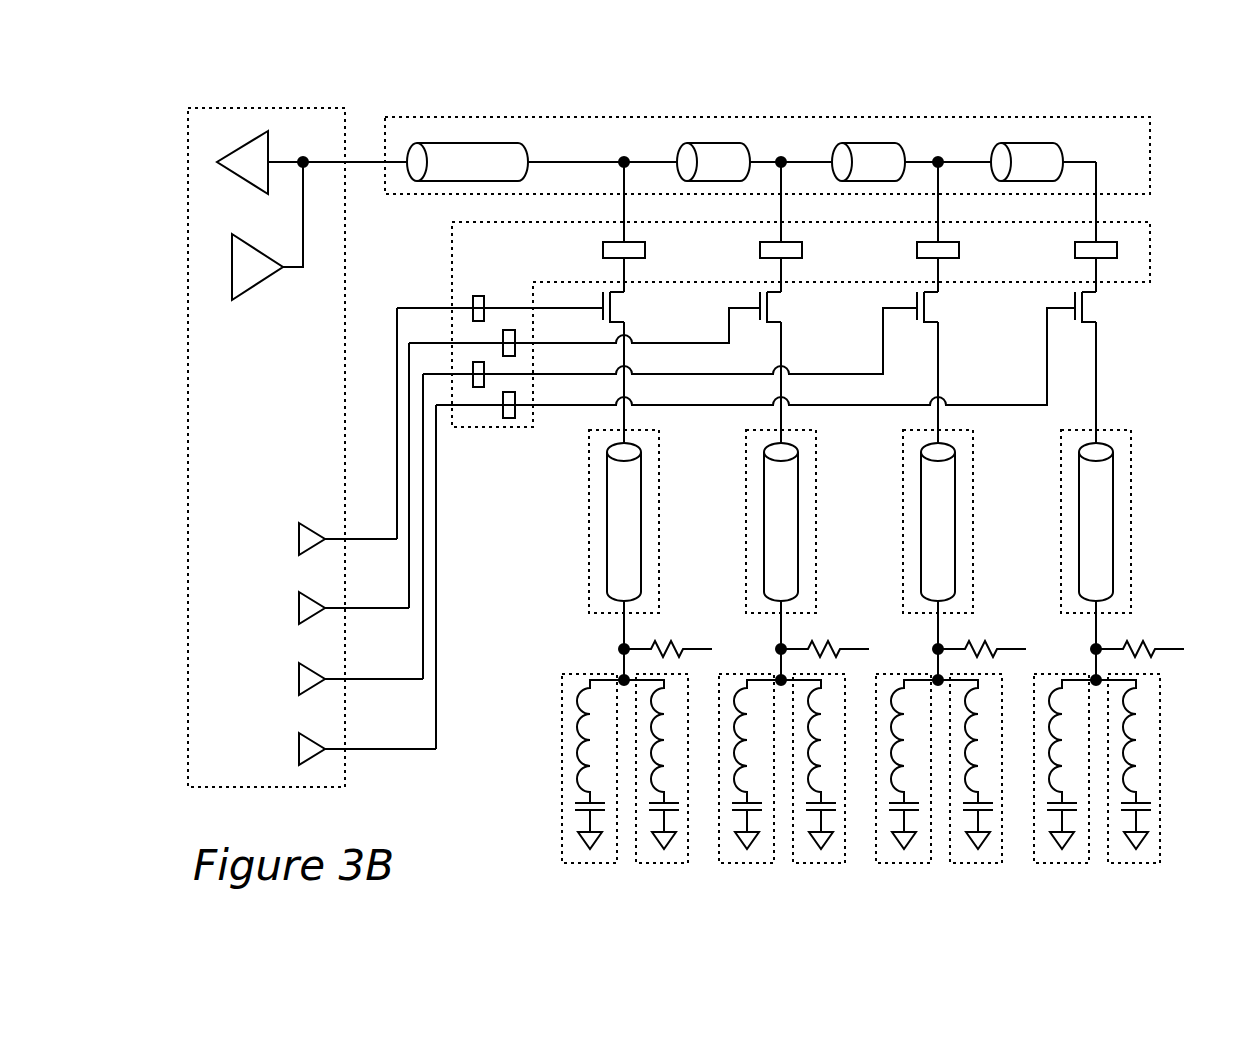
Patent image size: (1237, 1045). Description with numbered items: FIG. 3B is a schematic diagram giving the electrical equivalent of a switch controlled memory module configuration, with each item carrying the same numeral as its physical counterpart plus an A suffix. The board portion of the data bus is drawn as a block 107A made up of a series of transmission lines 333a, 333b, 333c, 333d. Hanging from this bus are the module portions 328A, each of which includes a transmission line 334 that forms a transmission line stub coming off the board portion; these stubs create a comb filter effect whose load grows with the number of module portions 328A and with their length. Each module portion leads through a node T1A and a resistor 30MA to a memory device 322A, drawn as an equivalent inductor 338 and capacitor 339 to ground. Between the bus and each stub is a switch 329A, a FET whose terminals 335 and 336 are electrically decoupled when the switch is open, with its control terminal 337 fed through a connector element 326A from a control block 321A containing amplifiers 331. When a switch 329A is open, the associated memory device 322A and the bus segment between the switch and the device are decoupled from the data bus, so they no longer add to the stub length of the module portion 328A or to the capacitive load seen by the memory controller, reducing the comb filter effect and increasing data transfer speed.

The control signal generating circuit 321A is at (345, 108).
The amplifier 331 is at (374, 539).
The delay line unit 107A is at (1090, 117).
The transmission line 333a is at (473, 143).
The transmission line 333b is at (713, 143).
The transmission line 333c is at (868, 143).
The transmission line 333d is at (1026, 143).
The connector 326A is at (614, 242).
The terminal 335 is at (628, 294).
The gate 337 is at (603, 306).
The switch 329A is at (642, 296).
The terminal 336 is at (627, 326).
The module portion 328A is at (589, 563).
The transmission line 334 is at (607, 516).
The output terminal T1A is at (612, 647).
The resistor 30MA is at (650, 647).
The memory device 322A is at (1163, 892).
The inductor 338 is at (578, 712).
The capacitor 339 is at (575, 807).